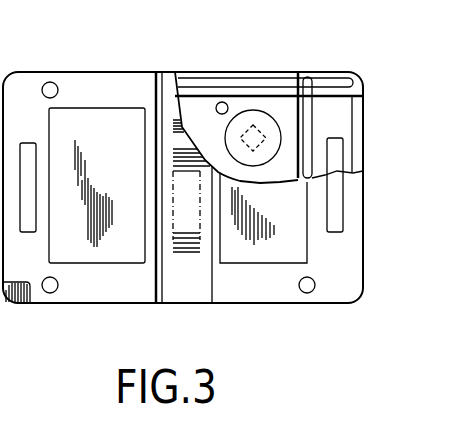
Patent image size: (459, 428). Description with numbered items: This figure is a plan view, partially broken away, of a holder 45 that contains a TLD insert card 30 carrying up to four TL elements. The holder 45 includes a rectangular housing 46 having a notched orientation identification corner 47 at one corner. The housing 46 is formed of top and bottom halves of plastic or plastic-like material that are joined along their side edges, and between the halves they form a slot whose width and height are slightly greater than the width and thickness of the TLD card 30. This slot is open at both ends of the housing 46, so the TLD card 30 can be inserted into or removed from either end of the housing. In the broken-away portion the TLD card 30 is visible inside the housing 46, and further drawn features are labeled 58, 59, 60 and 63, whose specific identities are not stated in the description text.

The rectangular housing 46 is at (127, 64).
The holder 45 is at (269, 62).
The TLD card 30 is at (203, 110).
The strip slot 59 is at (300, 111).
The edge rail 58 is at (306, 122).
The holes 60 is at (42, 84).
The notched orientation identification corner 47 is at (31, 304).
The spine strip 63 is at (192, 254).